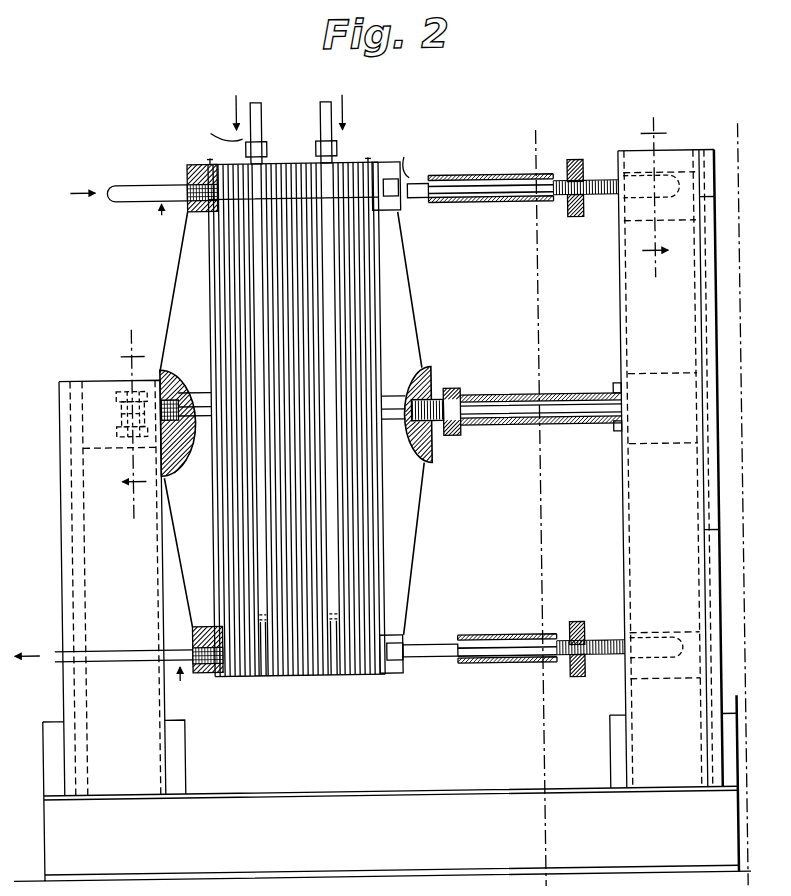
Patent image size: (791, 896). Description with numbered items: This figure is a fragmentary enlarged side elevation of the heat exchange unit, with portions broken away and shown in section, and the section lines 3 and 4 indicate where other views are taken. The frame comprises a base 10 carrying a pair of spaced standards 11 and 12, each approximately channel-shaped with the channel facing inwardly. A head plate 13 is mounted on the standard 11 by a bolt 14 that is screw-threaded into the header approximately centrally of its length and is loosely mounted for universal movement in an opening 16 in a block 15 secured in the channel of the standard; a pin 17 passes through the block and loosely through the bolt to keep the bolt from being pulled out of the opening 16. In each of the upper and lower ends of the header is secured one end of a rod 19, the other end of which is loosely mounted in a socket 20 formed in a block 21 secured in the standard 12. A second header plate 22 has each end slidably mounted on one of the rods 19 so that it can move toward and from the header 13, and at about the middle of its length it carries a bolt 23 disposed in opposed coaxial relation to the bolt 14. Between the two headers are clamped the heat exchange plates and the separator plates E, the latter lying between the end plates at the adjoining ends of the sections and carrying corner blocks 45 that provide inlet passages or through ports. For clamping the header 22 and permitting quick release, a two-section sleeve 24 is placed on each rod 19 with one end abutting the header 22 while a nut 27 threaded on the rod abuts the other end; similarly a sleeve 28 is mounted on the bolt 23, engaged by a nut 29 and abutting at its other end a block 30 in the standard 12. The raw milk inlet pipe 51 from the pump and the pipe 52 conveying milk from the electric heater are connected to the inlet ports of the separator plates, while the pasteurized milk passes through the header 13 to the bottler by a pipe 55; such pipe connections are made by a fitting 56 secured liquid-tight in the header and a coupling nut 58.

The section line 3- 3 is at (739, 493).
The section line 4- 4 is at (544, 503).
The base 10 is at (353, 800).
The standard 11 is at (68, 546).
The standard 12 is at (644, 495).
The head plate 13 is at (177, 291).
The bolt 14 is at (177, 462).
The block 15 is at (120, 393).
The opening 16 is at (117, 417).
The pin 17 is at (133, 381).
The rod 19 is at (506, 649).
The socket 20 is at (647, 632).
The block 21 is at (643, 226).
The second header plate 22 is at (419, 346).
The bolt 23 is at (445, 388).
The sleeve 24 is at (558, 176).
The nut 27 is at (585, 161).
The sleeve 28 is at (550, 395).
The nut 29 is at (463, 391).
The block 30 is at (650, 375).
The block 45 is at (328, 175).
The raw milk inlet pipe 51 is at (266, 117).
The pipe 52 is at (326, 113).
The pipe 55 is at (138, 184).
The fitting 56 is at (380, 190).
The coupling nut 58 is at (400, 199).
The separator plate E is at (258, 255).